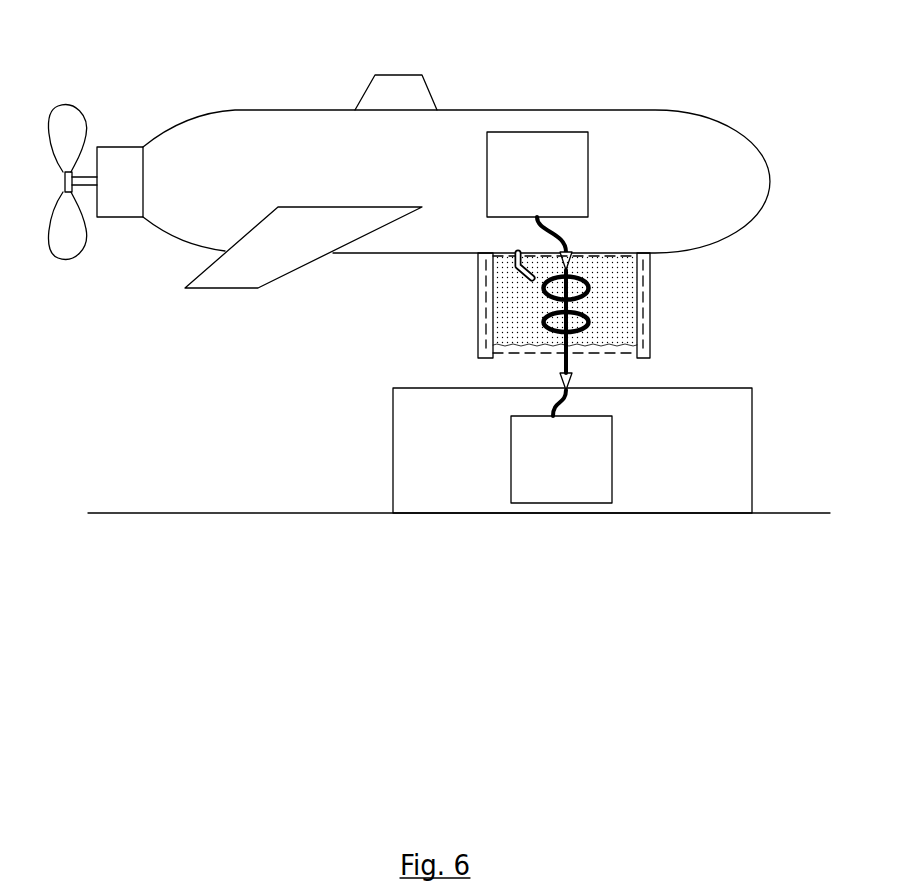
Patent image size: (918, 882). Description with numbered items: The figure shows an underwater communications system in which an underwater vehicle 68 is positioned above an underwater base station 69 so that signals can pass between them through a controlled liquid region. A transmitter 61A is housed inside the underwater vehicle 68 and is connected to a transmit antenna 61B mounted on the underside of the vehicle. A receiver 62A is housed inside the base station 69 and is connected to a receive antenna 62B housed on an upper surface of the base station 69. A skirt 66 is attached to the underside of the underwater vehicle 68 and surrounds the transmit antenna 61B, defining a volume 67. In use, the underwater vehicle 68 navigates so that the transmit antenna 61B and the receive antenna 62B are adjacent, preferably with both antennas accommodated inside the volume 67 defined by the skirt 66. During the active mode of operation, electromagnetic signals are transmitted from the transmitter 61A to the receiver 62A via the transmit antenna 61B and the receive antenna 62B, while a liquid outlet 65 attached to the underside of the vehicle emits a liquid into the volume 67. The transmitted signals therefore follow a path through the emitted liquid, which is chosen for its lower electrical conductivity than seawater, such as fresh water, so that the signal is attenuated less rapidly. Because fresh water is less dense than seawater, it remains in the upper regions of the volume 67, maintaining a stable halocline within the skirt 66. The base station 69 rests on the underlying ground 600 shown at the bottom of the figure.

The underwater vehicle 68 is at (235, 108).
The transmitter 61A is at (537, 201).
The transmit antenna 61B is at (576, 276).
The receiver 62A is at (561, 438).
The receive antenna 62B is at (590, 338).
The liquid outlet 65 is at (510, 258).
The skirt 66 is at (478, 315).
The volume 67 is at (532, 353).
The underwater base station 69 is at (393, 423).
The ground / sea floor 600 is at (287, 513).